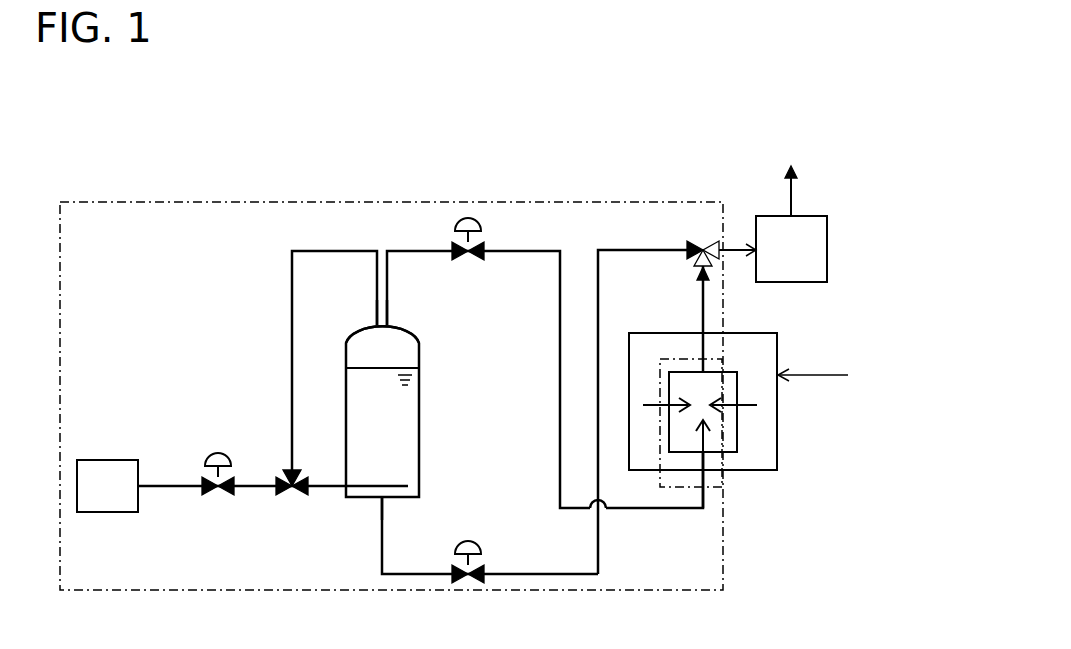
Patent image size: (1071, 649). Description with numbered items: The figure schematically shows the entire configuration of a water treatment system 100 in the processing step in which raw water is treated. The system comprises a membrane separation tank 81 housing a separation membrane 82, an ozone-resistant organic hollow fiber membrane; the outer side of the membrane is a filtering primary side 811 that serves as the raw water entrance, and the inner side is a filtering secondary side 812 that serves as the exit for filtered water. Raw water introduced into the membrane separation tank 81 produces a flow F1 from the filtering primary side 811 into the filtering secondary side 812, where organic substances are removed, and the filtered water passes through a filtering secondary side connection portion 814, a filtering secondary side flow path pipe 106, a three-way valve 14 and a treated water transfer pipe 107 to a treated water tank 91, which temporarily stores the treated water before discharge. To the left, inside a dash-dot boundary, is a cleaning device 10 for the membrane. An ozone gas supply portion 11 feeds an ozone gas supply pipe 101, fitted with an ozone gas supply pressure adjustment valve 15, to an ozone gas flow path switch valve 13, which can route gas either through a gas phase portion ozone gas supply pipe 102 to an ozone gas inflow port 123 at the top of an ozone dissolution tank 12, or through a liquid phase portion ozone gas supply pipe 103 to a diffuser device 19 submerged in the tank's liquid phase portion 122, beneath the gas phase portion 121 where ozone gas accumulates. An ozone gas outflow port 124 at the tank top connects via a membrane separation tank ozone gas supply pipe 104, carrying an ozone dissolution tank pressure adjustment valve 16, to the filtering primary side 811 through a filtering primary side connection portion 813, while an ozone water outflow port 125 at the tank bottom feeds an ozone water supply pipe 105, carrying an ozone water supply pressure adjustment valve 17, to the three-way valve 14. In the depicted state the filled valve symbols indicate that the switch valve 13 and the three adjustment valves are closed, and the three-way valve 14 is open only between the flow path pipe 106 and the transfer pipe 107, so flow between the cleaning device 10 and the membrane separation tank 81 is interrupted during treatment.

The water treatment system 100 is at (458, 97).
The cleaning device 10 is at (637, 202).
The ozone gas supply portion 11 is at (125, 468).
The ozone dissolution tank 12 is at (420, 412).
The ozone gas flow path switch valve 13 is at (284, 478).
The three-way valve 14 is at (710, 242).
The ozone gas supply pressure adjustment valve 15 is at (222, 497).
The ozone dissolution tank pressure adjustment valve 16 is at (488, 248).
The ozone water supply pressure adjustment valve 17 is at (488, 571).
The diffuser device 19 is at (418, 478).
The treated water tank 91 is at (815, 243).
The ozone gas supply pipe 101 is at (178, 489).
The gas phase portion ozone gas supply pipe 102 is at (291, 366).
The liquid phase portion ozone gas supply pipe 103 is at (325, 488).
The membrane separation tank ozone gas supply pipe 104 is at (390, 286).
The ozone water supply pipe 105 is at (385, 530).
The filtering secondary side flow path pipe 106 is at (701, 296).
The treated water transfer pipe 107 is at (735, 252).
The gas phase portion 121 is at (392, 353).
The liquid phase portion 122 is at (410, 450).
The ozone gas inflow port 123 is at (375, 325).
The ozone gas outflow port 124 is at (390, 325).
The ozone water outflow port 125 is at (376, 498).
The membrane separation tank 81 is at (758, 472).
The filtering primary side 811 is at (730, 446).
The filtering secondary side 812 is at (718, 427).
The filtering primary side connection portion 813 is at (701, 478).
The filtering secondary side connection portion 814 is at (700, 370).
The separation membrane 82 is at (735, 462).
The flow of the raw water F1 is at (737, 452).